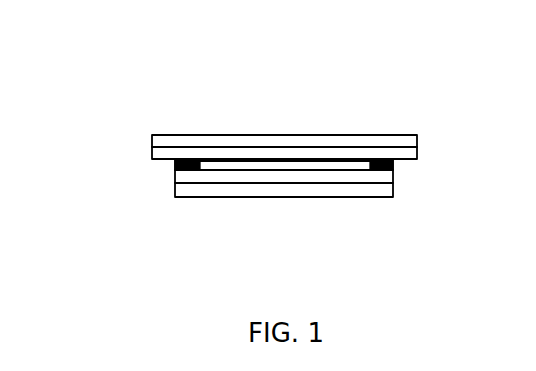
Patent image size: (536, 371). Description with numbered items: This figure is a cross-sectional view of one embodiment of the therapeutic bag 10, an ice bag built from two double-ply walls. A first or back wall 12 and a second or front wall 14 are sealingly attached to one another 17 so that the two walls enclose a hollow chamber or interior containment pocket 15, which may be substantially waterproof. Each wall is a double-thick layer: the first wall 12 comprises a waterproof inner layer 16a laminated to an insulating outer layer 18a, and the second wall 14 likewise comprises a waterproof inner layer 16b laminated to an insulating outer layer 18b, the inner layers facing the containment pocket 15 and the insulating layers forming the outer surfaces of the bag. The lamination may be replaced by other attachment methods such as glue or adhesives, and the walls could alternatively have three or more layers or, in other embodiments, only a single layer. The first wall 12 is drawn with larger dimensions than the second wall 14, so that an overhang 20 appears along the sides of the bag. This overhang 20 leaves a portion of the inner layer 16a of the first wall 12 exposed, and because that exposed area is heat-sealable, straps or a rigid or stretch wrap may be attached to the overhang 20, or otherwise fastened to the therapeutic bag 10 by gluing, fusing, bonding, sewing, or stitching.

The therapeutic bag 10 is at (92, 55).
The first wall 12 is at (259, 109).
The second wall 14 is at (247, 220).
The interior containment pocket 15 is at (320, 162).
The waterproof inner layer 16a is at (272, 150).
The waterproof inner layer 16b is at (268, 180).
The sealing attachment 17 is at (187, 160).
The insulating outer layer 18a is at (227, 140).
The insulating outer layer 18b is at (212, 190).
The overhang 20 is at (405, 158).